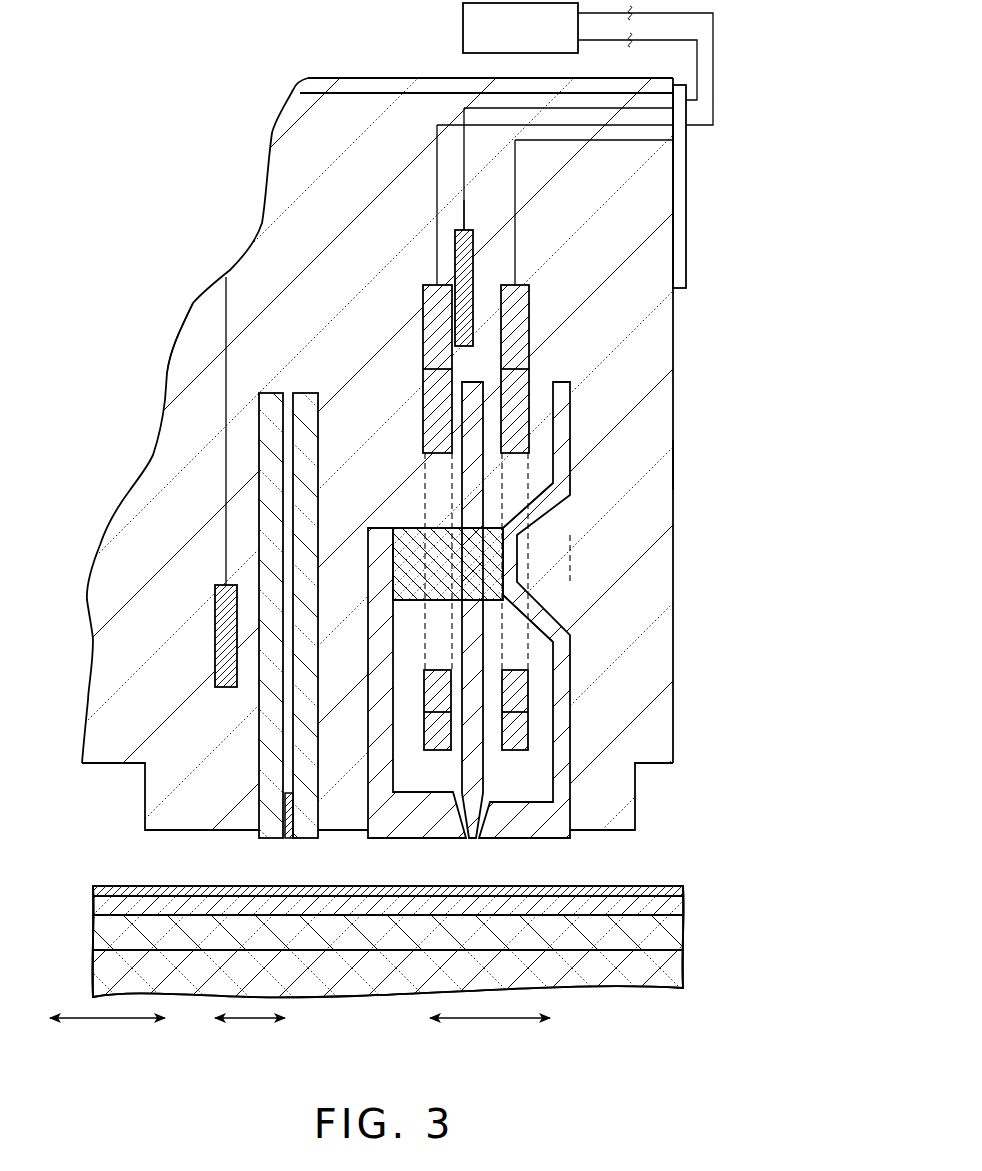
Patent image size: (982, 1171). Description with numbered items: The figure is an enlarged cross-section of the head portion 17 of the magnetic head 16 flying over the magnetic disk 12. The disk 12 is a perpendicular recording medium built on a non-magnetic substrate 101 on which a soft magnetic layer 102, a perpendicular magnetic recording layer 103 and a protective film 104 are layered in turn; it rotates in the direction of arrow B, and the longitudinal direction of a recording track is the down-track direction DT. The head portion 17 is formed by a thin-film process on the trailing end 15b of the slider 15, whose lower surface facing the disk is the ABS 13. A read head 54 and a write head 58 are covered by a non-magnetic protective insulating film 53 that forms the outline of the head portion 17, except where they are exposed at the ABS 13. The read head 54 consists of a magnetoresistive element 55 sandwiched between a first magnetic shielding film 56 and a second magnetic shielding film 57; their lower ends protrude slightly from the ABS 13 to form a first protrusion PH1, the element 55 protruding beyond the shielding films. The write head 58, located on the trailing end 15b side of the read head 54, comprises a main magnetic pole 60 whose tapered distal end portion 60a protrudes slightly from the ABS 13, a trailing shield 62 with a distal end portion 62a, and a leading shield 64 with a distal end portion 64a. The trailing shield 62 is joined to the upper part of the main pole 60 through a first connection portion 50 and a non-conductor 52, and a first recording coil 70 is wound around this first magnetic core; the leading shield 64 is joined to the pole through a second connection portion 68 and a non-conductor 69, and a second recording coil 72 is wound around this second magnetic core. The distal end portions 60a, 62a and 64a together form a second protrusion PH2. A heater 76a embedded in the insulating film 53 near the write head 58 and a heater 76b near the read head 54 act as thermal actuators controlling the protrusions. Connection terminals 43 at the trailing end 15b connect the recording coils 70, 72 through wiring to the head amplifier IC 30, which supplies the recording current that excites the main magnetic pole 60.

The magnetic disk 12 is at (426, 972).
The ABS 13 is at (112, 765).
The slider 15 is at (108, 690).
The trailing end of the slider 15b is at (674, 463).
The magnetic head 16 is at (207, 200).
The head portion 17 is at (195, 378).
The head amplifier IC 30 is at (463, 30).
The connection terminals 43 is at (687, 218).
The first connection portion 50 is at (508, 582).
The non-conductor 52 is at (518, 542).
The protective insulating film 53 is at (660, 393).
The read head 54 is at (252, 386).
The magnetoresistive element 55 is at (280, 812).
The first magnetic shielding film 56 is at (265, 548).
The second magnetic shielding film 57 is at (300, 495).
The write head 58 is at (378, 264).
The main magnetic pole 60 is at (472, 775).
The distal end portion of the main magnetic pole 60a is at (472, 841).
The trailing shield 62 is at (582, 642).
The distal end portion of the trailing shield 62a is at (525, 832).
The leading shield 64 is at (390, 637).
The distal end portion of the leading shield 64a is at (419, 832).
The second connection portion 68 is at (430, 530).
The non-conductor 69 is at (452, 548).
The first recording coil 70 is at (518, 393).
The second recording coil 72 is at (433, 405).
The heater 76a is at (452, 268).
The heater 76b is at (220, 628).
The substrate 101 is at (685, 970).
The soft magnetic layer 102 is at (685, 933).
The perpendicular magnetic recording layer 103 is at (685, 906).
The protective film 104 is at (685, 889).
The first protrusion PH1 is at (270, 843).
The second protrusion PH2 is at (392, 843).
The arrow B is at (167, 1034).
The down-track direction DT is at (490, 1034).